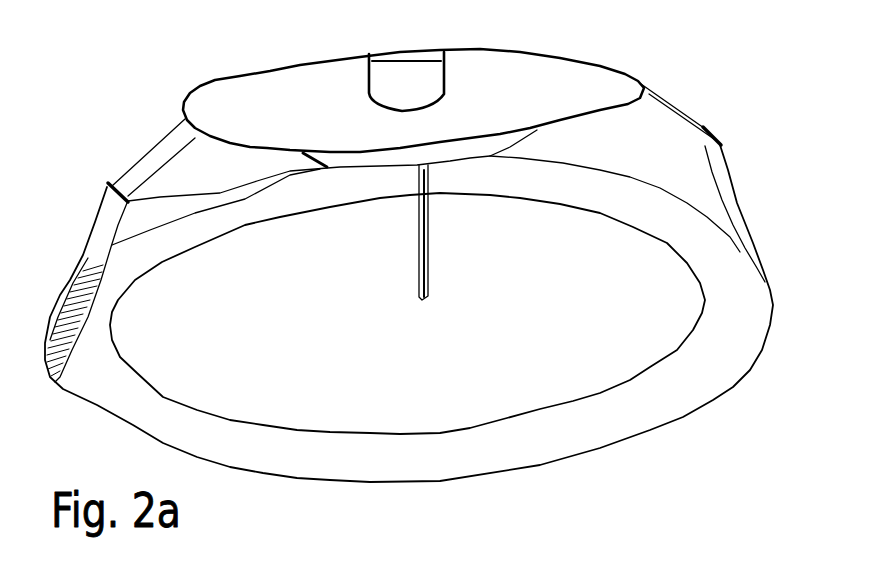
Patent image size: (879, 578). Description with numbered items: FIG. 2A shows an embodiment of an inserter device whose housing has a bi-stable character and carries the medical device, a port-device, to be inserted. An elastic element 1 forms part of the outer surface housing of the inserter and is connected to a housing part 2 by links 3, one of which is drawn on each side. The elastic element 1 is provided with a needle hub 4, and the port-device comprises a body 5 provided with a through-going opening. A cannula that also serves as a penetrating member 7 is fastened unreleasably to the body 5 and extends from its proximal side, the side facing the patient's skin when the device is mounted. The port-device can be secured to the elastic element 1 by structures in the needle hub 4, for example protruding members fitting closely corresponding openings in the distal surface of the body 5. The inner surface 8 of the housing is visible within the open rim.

The elastic element 1 is at (233, 101).
The housing part 2 is at (737, 201).
The links 3 is at (108, 184).
The needle hub 4 is at (435, 81).
The body 5 is at (478, 145).
The penetrating member 7 is at (430, 293).
The inner bottom surface 8 is at (407, 313).